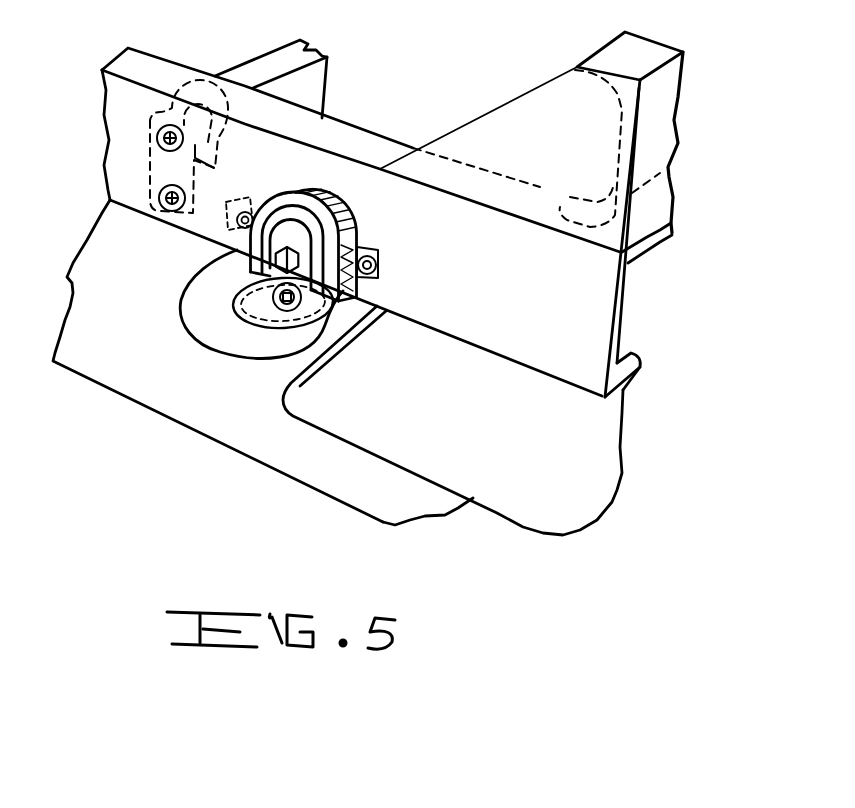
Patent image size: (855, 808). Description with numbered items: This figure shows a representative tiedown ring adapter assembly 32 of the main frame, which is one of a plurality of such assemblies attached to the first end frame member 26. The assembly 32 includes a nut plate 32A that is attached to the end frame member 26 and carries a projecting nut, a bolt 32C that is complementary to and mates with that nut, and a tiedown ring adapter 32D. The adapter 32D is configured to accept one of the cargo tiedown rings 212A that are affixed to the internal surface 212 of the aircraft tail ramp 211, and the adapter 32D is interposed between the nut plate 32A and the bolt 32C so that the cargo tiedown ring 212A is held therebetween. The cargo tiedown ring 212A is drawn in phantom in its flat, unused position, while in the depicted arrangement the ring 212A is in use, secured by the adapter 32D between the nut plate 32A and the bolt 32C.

The first end frame member 26 is at (594, 324).
The tiedown ring adapter assembly 32 is at (294, 202).
The nut plate 32A is at (380, 243).
The bolt 32C is at (300, 256).
The tiedown ring adapter 32D is at (273, 217).
The tail ramp 211 is at (382, 513).
The internal surface 212 is at (237, 437).
The cargo tiedown ring 212A is at (253, 192).